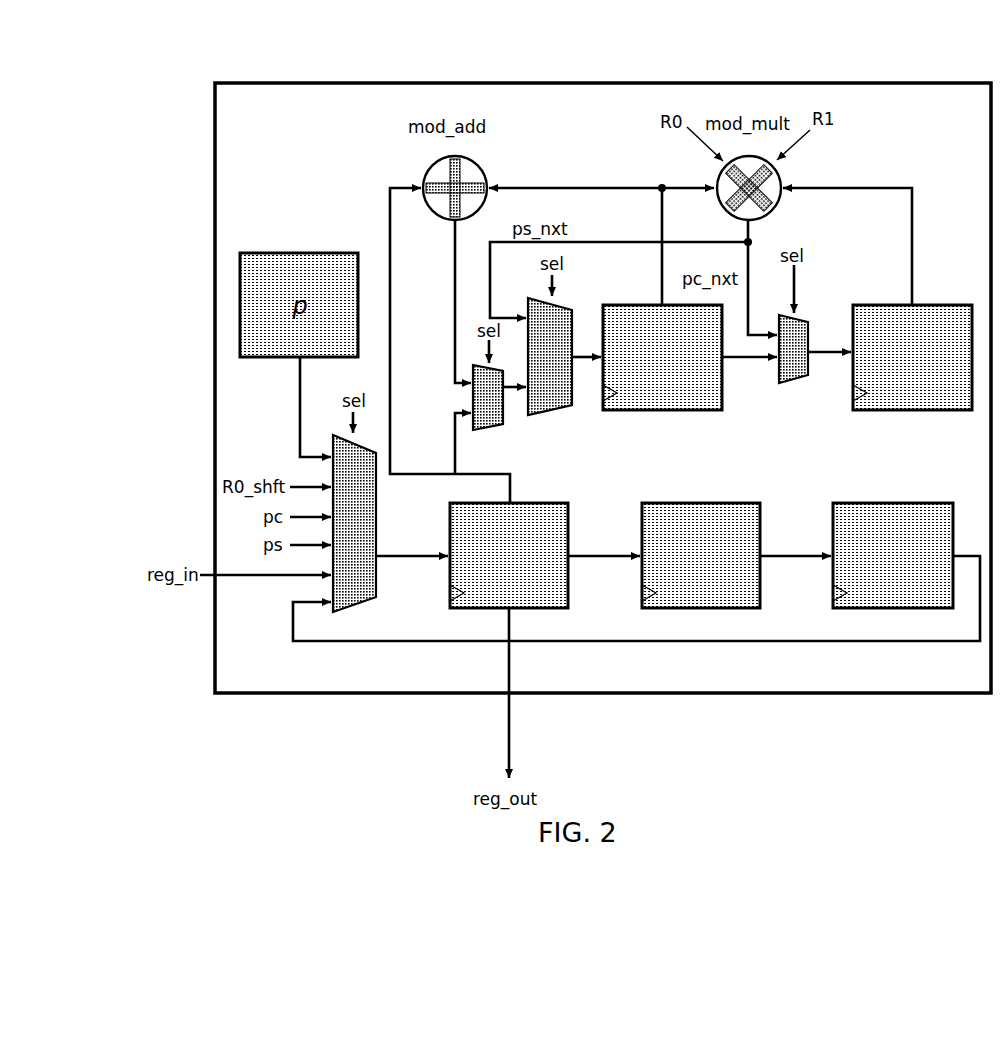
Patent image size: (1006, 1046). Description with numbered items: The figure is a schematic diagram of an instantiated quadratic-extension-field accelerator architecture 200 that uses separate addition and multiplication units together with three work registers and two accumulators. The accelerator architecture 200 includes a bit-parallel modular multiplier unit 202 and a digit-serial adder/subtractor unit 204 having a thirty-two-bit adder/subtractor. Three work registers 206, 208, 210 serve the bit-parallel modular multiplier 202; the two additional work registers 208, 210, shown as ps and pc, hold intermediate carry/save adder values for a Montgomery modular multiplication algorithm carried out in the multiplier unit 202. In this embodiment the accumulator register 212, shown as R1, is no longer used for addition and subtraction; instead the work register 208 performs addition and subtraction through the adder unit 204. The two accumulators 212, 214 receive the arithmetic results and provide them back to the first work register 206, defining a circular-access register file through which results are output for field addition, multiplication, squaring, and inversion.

The F_p^2 accelerator architecture 200 is at (598, 807).
The bit-parallel modular multiplier unit 202 is at (690, 170).
The digit-serial adder/subtractor unit 204 is at (413, 166).
The work register 206 is at (522, 608).
The work register 208 is at (633, 410).
The work register 210 is at (898, 410).
The accumulator register 212 is at (687, 608).
The accumulator register 214 is at (873, 608).